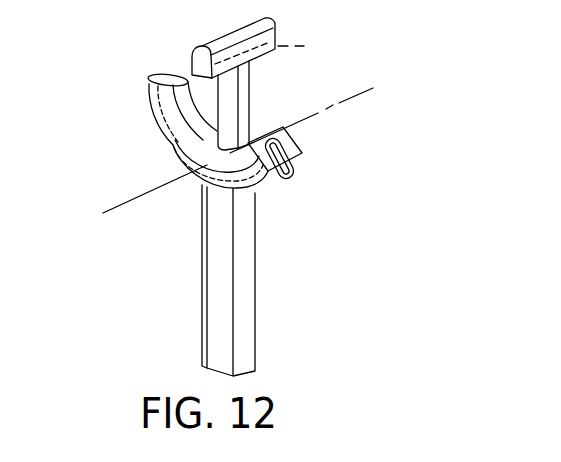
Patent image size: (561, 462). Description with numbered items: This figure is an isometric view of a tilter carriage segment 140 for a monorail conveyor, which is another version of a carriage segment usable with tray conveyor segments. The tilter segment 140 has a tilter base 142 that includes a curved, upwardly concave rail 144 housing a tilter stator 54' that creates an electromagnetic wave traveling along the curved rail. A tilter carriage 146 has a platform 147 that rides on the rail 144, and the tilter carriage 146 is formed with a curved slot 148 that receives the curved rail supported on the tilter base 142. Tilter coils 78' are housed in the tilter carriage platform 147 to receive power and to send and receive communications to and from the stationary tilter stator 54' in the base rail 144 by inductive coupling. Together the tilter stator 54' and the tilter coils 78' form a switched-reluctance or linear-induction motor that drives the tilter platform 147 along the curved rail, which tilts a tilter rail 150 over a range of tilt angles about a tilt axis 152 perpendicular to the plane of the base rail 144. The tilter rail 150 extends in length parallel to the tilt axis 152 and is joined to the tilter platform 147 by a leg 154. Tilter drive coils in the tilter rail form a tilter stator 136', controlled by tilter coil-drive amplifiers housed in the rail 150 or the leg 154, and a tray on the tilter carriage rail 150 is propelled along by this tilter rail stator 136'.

The tilter rail 150 is at (221, 43).
The tilter stator 136' is at (312, 49).
The tilter carriage 146 is at (265, 105).
The leg 154 is at (243, 112).
The tilter carriage platform 147 is at (221, 135).
The tilter stator 54' is at (135, 107).
The tilter coils 78' is at (184, 175).
The curved rail 144 is at (292, 128).
The curved slot 148 is at (298, 158).
The tilter carriage segment 140 is at (227, 280).
The tilter base 142 is at (212, 230).
The tilt axis 152 is at (119, 207).